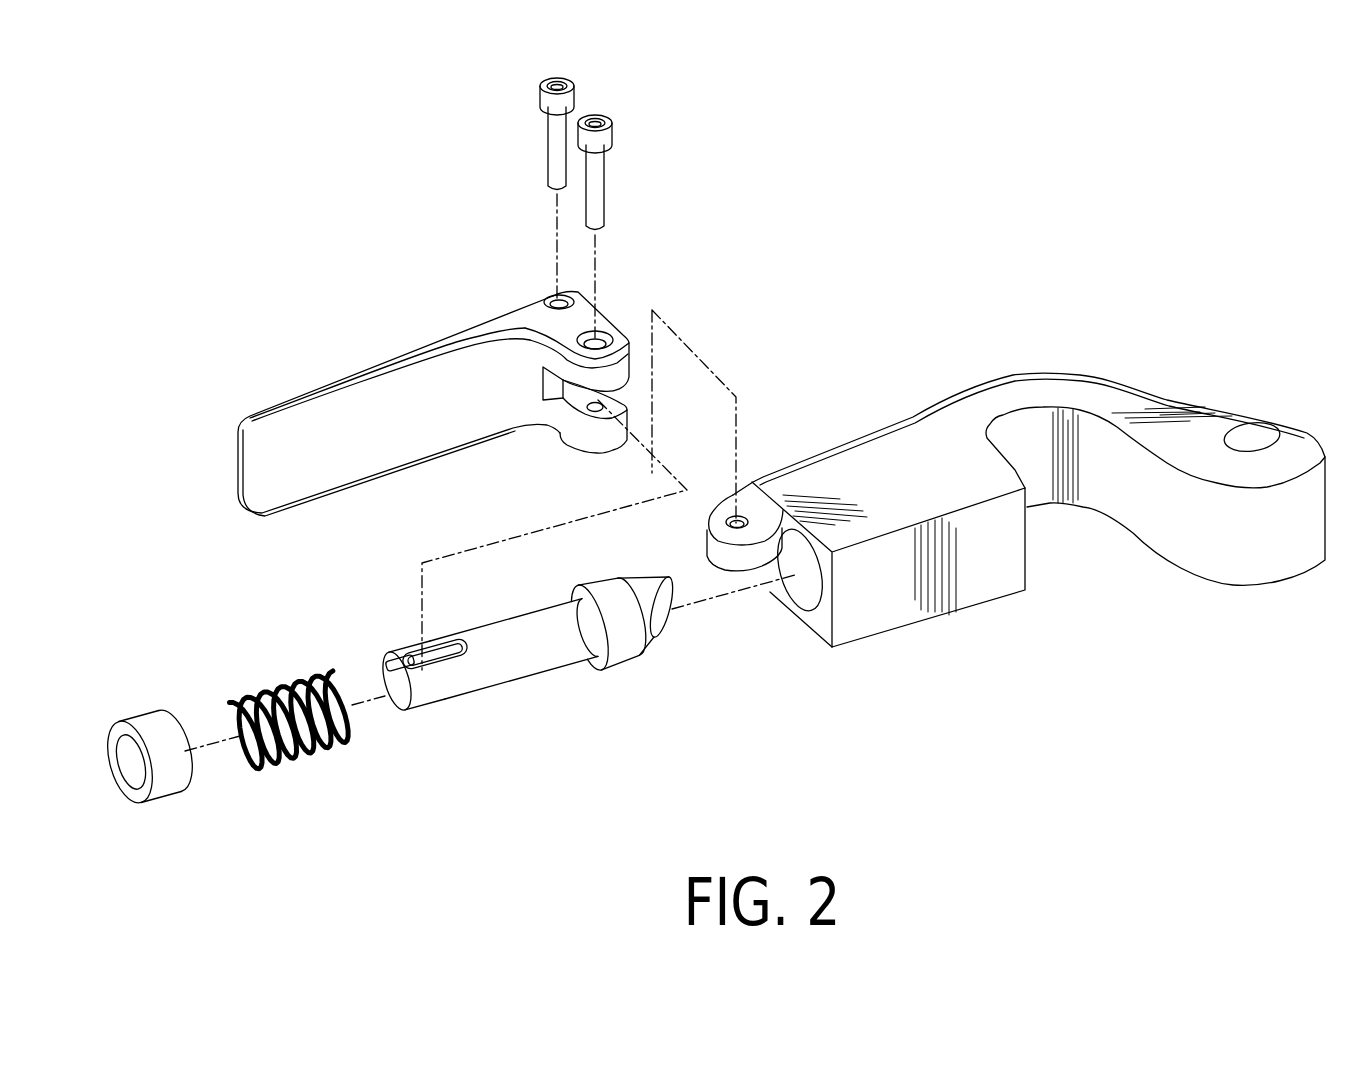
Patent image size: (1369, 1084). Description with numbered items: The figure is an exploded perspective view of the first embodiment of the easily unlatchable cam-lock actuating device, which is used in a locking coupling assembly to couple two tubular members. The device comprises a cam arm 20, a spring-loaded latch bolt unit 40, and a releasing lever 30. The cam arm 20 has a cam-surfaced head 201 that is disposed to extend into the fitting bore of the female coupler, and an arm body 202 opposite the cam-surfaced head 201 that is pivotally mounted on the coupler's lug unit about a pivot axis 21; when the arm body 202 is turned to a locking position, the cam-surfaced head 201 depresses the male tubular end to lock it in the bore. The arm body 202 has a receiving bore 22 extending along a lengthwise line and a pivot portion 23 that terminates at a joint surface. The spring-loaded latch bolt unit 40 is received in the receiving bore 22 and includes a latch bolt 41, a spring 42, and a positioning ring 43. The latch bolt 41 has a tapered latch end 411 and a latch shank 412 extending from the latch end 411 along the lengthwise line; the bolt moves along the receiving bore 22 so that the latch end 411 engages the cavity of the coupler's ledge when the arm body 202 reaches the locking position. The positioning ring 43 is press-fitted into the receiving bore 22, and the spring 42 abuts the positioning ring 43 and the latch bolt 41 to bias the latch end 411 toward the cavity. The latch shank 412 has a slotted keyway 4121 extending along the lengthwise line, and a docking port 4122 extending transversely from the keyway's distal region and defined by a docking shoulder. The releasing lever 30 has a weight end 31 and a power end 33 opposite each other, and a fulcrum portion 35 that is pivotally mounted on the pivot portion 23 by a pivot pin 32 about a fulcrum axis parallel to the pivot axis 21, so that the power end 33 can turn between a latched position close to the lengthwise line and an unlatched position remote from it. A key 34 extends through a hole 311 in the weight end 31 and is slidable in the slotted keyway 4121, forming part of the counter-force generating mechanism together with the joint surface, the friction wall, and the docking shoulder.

The cam arm 20 is at (1016, 478).
The pivot axis 21 is at (1257, 433).
The cam-surfaced head 201 is at (1190, 427).
The arm body 202 is at (842, 488).
The receiving bore 22 is at (797, 612).
The pivot portion 23 is at (738, 568).
The releasing lever 30 is at (418, 432).
The weight end 31 is at (600, 334).
The hole 311 is at (603, 330).
The pivot pin 32 is at (557, 125).
The power end 33 is at (247, 466).
The key 34 is at (599, 160).
The fulcrum portion 35 is at (555, 301).
The spring-loaded latch bolt unit 40 is at (472, 693).
The latch bolt 41 is at (565, 672).
The latch end 411 is at (663, 645).
The latch shank 412 is at (406, 690).
The slotted keyway 4121 is at (442, 655).
The docking port 4122 is at (408, 661).
The spring 42 is at (297, 757).
The positioning ring 43 is at (160, 800).